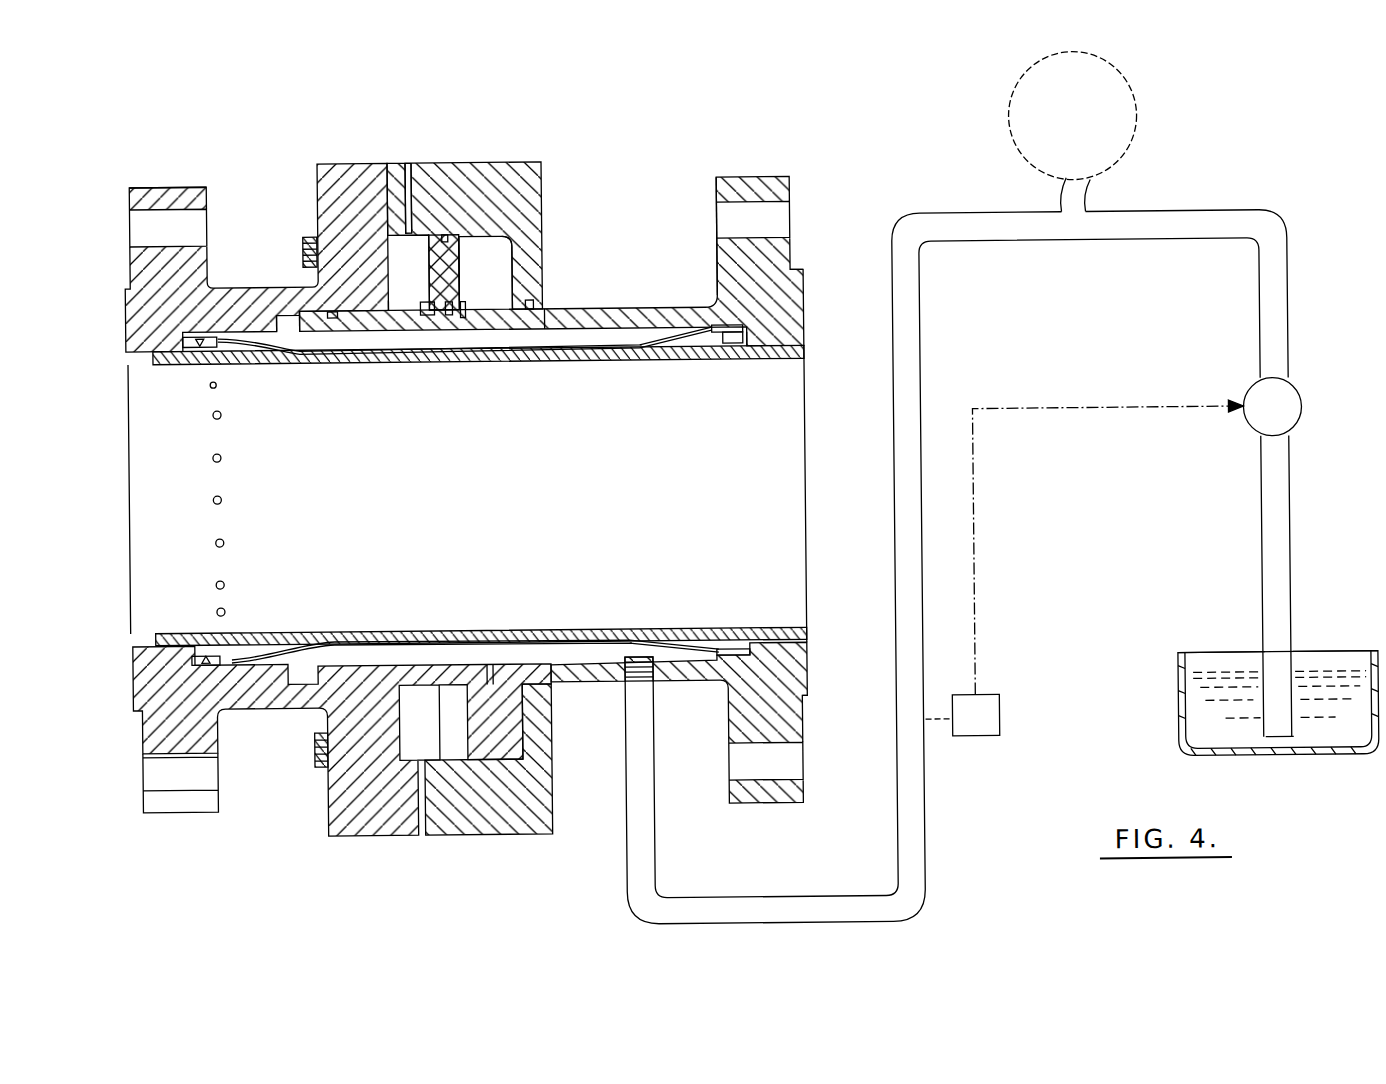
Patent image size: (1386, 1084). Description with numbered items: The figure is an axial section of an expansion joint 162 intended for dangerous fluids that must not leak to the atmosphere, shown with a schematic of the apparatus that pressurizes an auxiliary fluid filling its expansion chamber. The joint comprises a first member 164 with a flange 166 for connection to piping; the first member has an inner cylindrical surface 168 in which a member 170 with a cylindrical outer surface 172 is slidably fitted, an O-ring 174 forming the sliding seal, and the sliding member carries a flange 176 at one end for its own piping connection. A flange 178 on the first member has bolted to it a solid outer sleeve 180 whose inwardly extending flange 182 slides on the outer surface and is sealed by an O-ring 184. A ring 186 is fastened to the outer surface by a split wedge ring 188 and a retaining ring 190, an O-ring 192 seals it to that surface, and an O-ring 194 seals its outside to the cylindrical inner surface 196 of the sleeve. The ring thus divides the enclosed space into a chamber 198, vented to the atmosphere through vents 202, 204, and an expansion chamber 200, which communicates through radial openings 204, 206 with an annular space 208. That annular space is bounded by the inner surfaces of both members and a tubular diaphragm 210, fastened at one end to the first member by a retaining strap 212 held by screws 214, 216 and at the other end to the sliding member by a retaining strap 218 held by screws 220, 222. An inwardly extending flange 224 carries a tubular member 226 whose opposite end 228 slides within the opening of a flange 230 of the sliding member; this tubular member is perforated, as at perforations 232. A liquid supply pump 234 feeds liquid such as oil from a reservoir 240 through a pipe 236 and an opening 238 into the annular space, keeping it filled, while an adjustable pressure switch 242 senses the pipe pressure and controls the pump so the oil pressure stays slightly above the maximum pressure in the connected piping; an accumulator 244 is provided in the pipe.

The expansion joint 162 is at (413, 145).
The first member 164 is at (254, 295).
The flange 166 is at (196, 266).
The inner cylindrical surface 168 is at (293, 320).
The member 170 is at (400, 334).
The cylindrical outer surface 172 is at (605, 315).
The O-ring 174 is at (335, 311).
The flange 176 is at (731, 263).
The flange 178 is at (357, 179).
The solid outer sleeve 180 is at (492, 177).
The inwardly extending flange 182 is at (538, 262).
The O-ring 184 is at (528, 342).
The ring 186 is at (454, 276).
The split wedge ring 188 is at (430, 321).
The retaining ring 190 is at (462, 321).
The O-ring 192 is at (450, 306).
The O-ring 194 is at (442, 239).
The cylindrical inner surface 196 is at (517, 250).
The chamber 198 is at (396, 308).
The expansion chamber 200 is at (512, 286).
The vent 202 is at (416, 183).
The vent 204 is at (482, 322).
The radial opening 206 is at (490, 674).
The annular space 208 is at (633, 336).
The diaphragm 210 is at (244, 364).
The retaining strap 212 is at (198, 338).
The screw 214 is at (202, 365).
The screw 216 is at (207, 644).
The retaining strap 218 is at (746, 338).
The screw 220 is at (727, 340).
The screw 222 is at (730, 651).
The inwardly extending flange 224 is at (132, 333).
The tubular member 226 is at (289, 636).
The opposite end 228 is at (805, 626).
The flange 230 is at (808, 333).
The perforations 232 is at (220, 418).
The liquid supply pump 234 is at (1302, 411).
The pipe 236 is at (894, 573).
The opening 238 is at (613, 665).
The reservoir 240 is at (1175, 690).
The adjustable pressure switch 242 is at (985, 706).
The accumulator 244 is at (1143, 153).